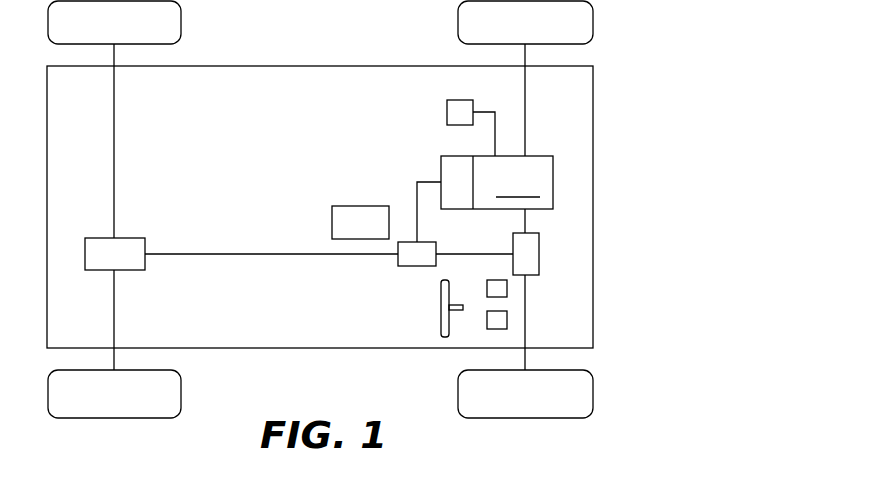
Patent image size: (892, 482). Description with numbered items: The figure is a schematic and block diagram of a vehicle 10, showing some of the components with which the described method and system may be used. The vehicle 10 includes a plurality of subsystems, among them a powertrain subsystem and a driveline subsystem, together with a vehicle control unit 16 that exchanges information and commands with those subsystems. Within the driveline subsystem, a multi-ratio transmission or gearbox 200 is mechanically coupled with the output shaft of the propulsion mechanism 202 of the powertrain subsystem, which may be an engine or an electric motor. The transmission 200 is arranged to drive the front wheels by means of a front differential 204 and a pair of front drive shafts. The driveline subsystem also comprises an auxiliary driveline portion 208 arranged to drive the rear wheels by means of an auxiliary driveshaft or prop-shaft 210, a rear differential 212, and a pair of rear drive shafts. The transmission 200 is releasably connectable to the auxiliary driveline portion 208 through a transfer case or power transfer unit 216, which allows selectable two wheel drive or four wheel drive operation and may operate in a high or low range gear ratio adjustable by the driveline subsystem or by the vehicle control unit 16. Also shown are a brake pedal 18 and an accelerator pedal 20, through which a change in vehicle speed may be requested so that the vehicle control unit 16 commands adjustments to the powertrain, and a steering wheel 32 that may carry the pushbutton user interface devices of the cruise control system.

The vehicle 10 is at (652, 112).
The vehicle control unit 16 is at (447, 108).
The brake pedal 18 is at (508, 288).
The accelerator pedal 20 is at (508, 320).
The steering wheel 32 is at (441, 298).
The transmission 200 is at (441, 166).
The propulsion mechanism 202 is at (518, 186).
The front differential 204 is at (527, 252).
The auxiliary driveline portion 208 is at (277, 278).
The auxiliary driveshaft 210 is at (213, 254).
The rear differential 212 is at (93, 239).
The transfer case 216 is at (398, 262).